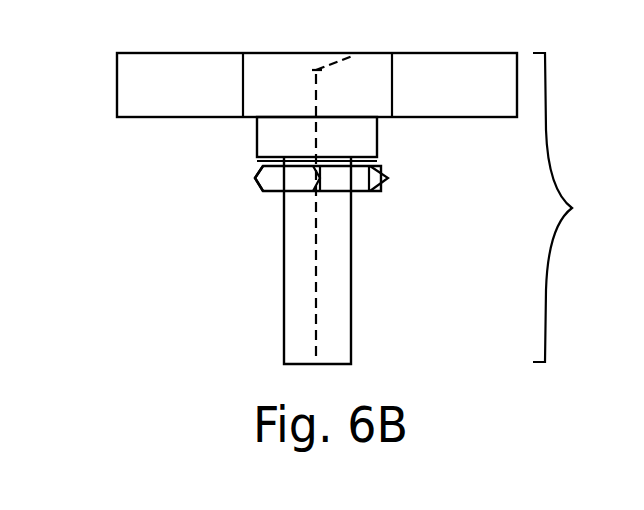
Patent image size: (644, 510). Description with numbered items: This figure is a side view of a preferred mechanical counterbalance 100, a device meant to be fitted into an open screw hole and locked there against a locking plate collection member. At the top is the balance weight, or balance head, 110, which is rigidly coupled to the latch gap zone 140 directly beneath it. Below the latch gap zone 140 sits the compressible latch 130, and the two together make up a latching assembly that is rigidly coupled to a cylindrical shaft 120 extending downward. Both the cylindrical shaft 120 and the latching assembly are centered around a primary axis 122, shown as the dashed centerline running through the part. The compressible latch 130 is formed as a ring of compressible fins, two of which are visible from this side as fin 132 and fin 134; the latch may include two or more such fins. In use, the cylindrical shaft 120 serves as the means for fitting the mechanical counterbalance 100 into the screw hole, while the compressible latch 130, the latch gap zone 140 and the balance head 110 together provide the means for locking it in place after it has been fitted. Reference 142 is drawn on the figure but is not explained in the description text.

The mechanical counterbalance 100 is at (581, 207).
The balance weight 110 is at (425, 52).
The cylindrical shaft 120 is at (352, 290).
The primary axis 122 is at (356, 53).
The compressible latch 130 is at (362, 192).
The fin 132 is at (272, 192).
The fin 134 is at (392, 180).
The latch gap zone 140 is at (380, 130).
The washer 142 is at (276, 161).